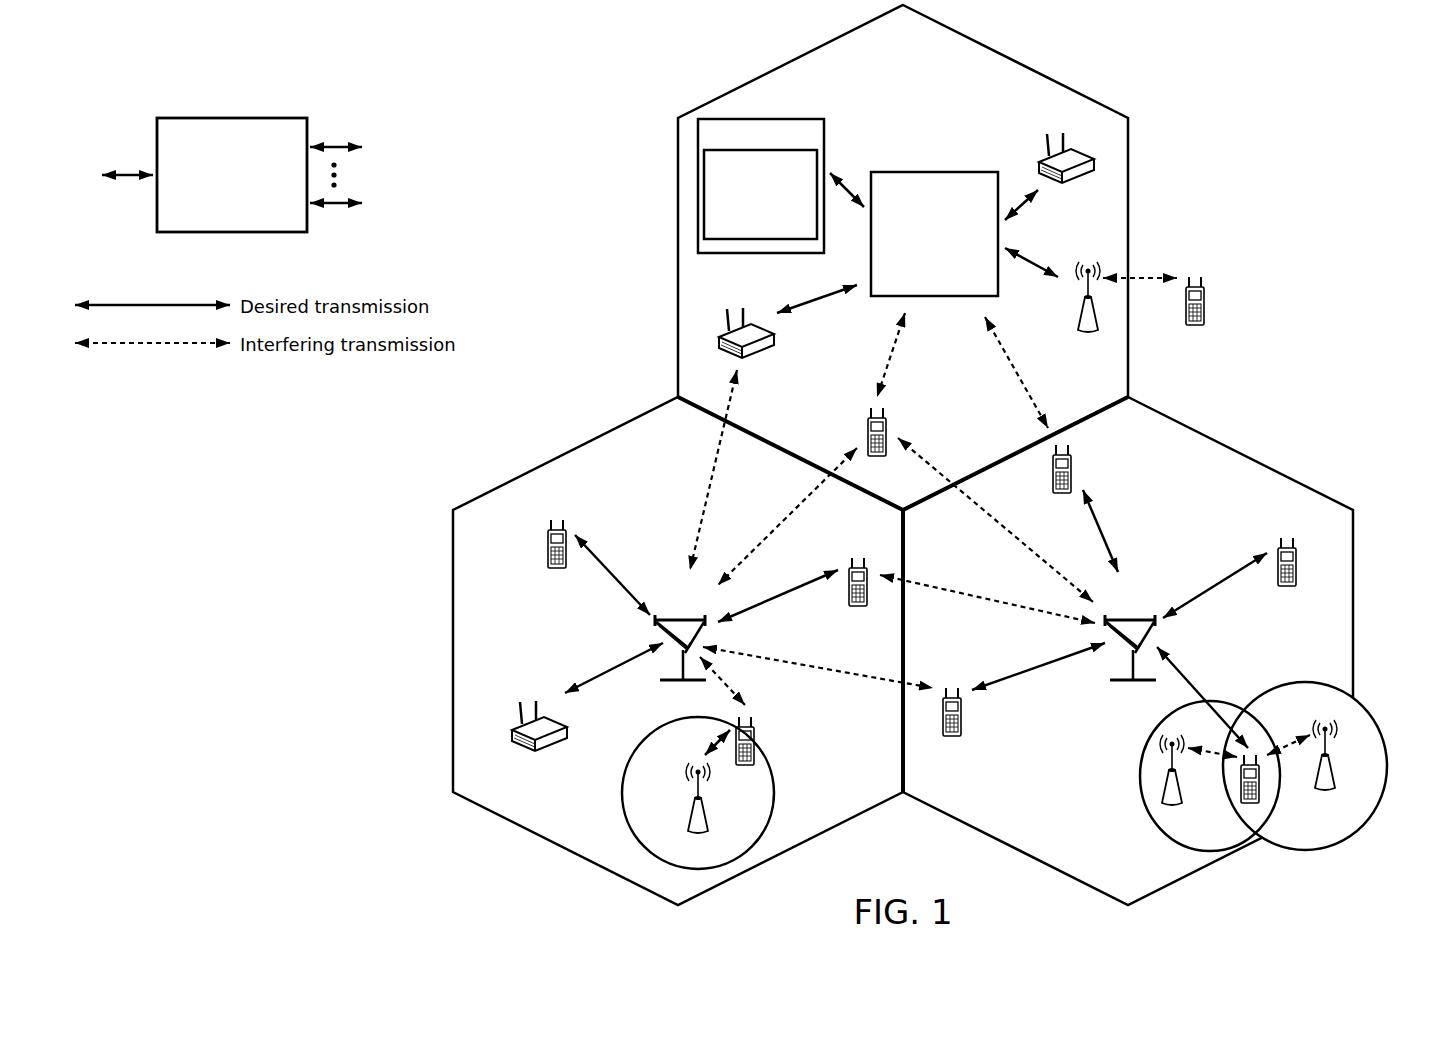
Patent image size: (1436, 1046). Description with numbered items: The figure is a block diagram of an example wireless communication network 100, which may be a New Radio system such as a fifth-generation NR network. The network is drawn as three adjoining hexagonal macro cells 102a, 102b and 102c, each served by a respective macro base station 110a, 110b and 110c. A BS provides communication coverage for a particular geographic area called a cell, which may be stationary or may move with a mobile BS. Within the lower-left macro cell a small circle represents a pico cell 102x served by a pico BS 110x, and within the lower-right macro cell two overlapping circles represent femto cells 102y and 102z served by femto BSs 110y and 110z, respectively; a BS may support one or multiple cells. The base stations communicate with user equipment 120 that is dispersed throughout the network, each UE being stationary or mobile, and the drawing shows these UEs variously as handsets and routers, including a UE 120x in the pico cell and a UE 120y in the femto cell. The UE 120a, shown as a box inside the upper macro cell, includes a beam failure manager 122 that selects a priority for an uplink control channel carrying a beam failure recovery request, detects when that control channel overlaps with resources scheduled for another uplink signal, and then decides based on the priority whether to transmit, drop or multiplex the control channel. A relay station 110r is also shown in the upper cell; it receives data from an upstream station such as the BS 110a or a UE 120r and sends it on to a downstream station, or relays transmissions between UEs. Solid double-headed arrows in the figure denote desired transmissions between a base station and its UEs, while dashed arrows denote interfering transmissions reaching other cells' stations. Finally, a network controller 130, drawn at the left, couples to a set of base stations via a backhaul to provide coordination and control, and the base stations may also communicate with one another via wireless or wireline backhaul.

The wireless communication network 100 is at (1283, 77).
The macro cell 102a is at (1014, 60).
The macro cell 102b is at (570, 452).
The macro cell 102c is at (1241, 451).
The pico cell 102x is at (647, 738).
The femto cell 102y is at (1140, 744).
The femto cell 102z is at (1298, 680).
The macro base station 110a is at (970, 172).
The macro base station 110b is at (682, 618).
The macro base station 110c is at (1132, 618).
The relay station 110r is at (1068, 322).
The pico base station 110x is at (708, 826).
The femto base station 110y is at (1180, 798).
The femto base station 110z is at (1335, 782).
The user equipment 120 is at (1070, 150).
The user equipment 120a is at (733, 170).
The user equipment 120r is at (1205, 318).
The user equipment 120x is at (760, 737).
The user equipment 120y is at (1243, 802).
The beam failure manager 122 is at (704, 190).
The network controller 130 is at (228, 118).